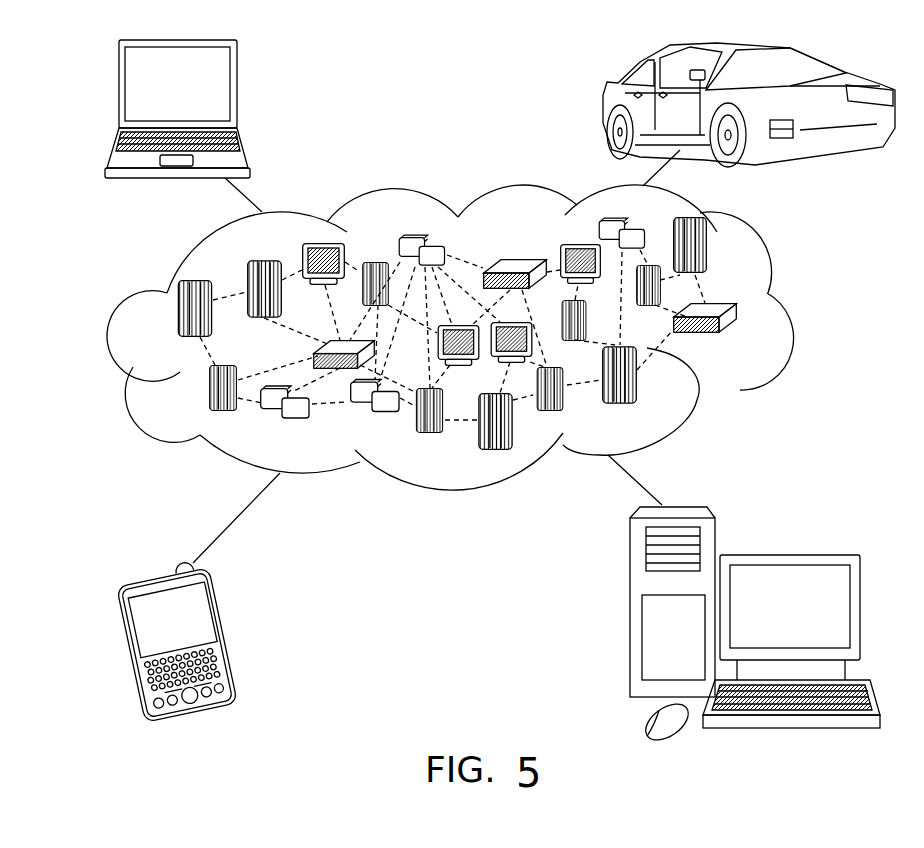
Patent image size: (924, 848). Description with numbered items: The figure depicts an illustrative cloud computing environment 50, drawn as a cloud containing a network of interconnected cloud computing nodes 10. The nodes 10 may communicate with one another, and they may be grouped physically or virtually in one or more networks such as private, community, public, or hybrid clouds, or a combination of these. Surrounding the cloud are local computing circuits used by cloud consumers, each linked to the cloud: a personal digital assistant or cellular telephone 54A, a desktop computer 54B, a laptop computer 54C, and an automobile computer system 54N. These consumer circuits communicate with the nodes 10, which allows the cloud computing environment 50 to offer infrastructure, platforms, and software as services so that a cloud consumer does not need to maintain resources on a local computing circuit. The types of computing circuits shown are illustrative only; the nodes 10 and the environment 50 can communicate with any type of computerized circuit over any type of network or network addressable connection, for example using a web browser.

The cloud computing nodes 10 is at (748, 344).
The cloud computing environment 50 is at (792, 315).
The personal digital assistant (PDA) or cellular telephone 54A is at (228, 632).
The desktop computer 54B is at (790, 553).
The laptop computer 54C is at (237, 92).
The automobile computer system 54N is at (604, 105).